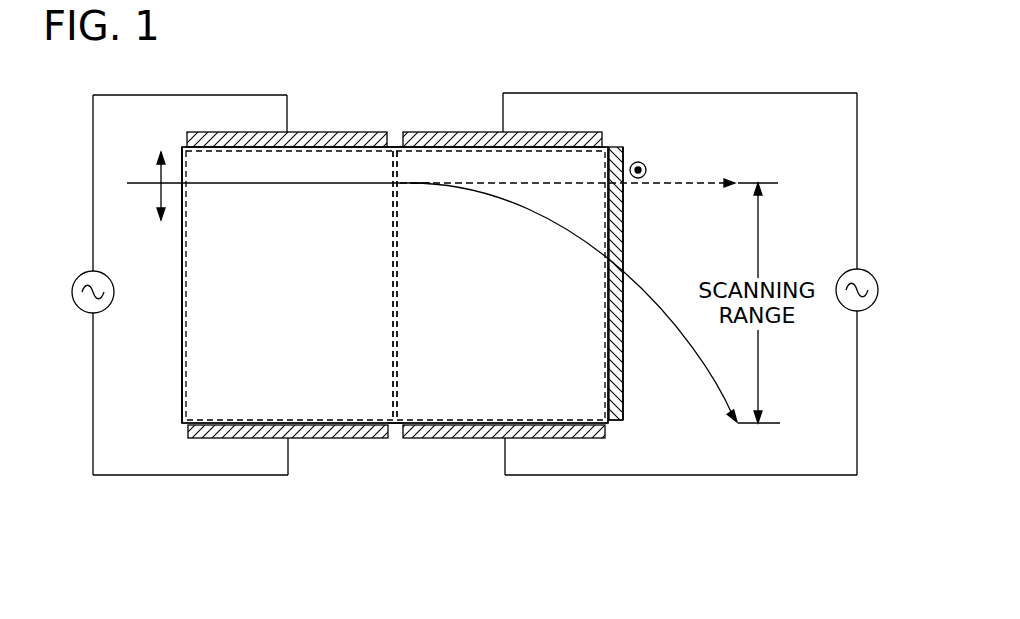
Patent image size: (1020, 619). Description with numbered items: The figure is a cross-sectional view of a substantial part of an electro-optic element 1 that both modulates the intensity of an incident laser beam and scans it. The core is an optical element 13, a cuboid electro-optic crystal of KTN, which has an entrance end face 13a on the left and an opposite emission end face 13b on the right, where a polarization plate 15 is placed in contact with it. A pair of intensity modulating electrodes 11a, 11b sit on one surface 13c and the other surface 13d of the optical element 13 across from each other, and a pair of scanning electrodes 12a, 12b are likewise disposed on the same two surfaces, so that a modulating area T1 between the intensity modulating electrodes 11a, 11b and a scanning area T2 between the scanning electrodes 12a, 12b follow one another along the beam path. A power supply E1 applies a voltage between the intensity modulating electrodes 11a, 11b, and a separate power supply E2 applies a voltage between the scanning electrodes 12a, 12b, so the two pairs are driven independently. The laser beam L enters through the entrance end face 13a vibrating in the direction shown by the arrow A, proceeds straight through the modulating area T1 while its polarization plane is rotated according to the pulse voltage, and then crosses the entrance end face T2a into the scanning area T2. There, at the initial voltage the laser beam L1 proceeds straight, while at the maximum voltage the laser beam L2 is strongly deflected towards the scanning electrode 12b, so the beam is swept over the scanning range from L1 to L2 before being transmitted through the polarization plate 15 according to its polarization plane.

The electro-optic element 1 is at (690, 50).
The intensity modulating electrode 11a is at (344, 132).
The intensity modulating electrode 11b is at (336, 440).
The scanning electrode 12a is at (477, 132).
The scanning electrode 12b is at (463, 440).
The optical element 13 is at (200, 407).
The entrance end face 13a is at (182, 372).
The emission end face 13b is at (623, 157).
The one surface 13c is at (393, 140).
The other surface 13d is at (397, 440).
The polarization plate 15 is at (617, 407).
The modulating area T1 is at (180, 243).
The scanning area T2 is at (625, 213).
The entrance end face of the scanning area T2a is at (393, 373).
The laser beam L is at (138, 183).
The laser beam L1 is at (677, 181).
The laser beam L2 is at (685, 343).
The arrow A is at (160, 195).
The power supply E1 is at (73, 300).
The power supply E2 is at (877, 280).